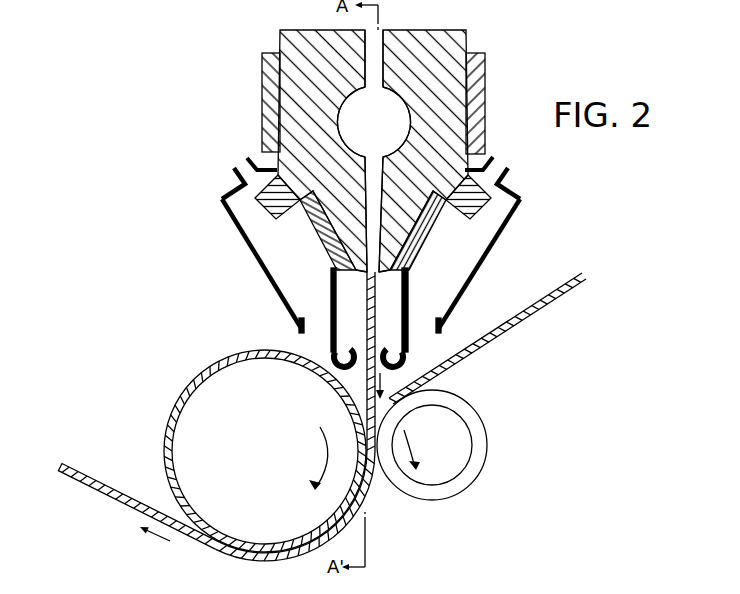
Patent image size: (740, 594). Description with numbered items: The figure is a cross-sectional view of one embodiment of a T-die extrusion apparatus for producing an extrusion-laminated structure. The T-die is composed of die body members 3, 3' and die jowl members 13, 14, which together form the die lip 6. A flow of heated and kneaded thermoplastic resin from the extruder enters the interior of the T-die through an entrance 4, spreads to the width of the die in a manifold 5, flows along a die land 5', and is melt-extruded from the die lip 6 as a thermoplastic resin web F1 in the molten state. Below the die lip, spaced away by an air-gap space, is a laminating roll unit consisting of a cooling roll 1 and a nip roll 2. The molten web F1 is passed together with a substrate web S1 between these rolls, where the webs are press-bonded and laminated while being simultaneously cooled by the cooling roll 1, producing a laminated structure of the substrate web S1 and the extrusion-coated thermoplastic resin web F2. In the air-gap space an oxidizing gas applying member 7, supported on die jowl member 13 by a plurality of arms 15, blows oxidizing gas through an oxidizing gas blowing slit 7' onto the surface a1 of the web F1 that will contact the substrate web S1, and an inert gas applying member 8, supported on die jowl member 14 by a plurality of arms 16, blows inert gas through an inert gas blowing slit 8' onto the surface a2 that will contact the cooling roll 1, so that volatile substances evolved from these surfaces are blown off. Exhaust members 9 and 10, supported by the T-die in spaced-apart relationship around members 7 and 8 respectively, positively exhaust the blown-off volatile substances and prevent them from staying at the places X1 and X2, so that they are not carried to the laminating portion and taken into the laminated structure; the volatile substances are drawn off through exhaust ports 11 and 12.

The cooling roll 1 is at (181, 398).
The nip roll 2 is at (488, 414).
The die body member 3 is at (436, 140).
The die body member 3' is at (305, 140).
The entrance 4 is at (387, 28).
The manifold 5 is at (373, 122).
The die land 5' is at (394, 214).
The die lip 6 is at (372, 262).
The oxidizing gas applying member 7 is at (405, 362).
The oxidizing gas blowing slit 7' is at (453, 330).
The inert gas applying member 8 is at (331, 352).
The inert gas blowing slit 8' is at (292, 326).
The exhaust member 9 is at (489, 250).
The exhaust member 10 is at (262, 262).
The exhaust port 11 is at (507, 168).
The exhaust port 12 is at (233, 169).
The die jowl member 13 is at (433, 236).
The die jowl member 14 is at (309, 232).
The arms 15 is at (409, 288).
The arms 16 is at (331, 281).
The thermoplastic resin web F1 is at (367, 289).
The thermoplastic resin web F2 is at (104, 477).
The substrate web S1 is at (550, 305).
The place of staying volatile substances X1 is at (423, 316).
The place of staying volatile substances X2 is at (321, 316).
The web surface a1 is at (378, 321).
The web surface a2 is at (362, 321).